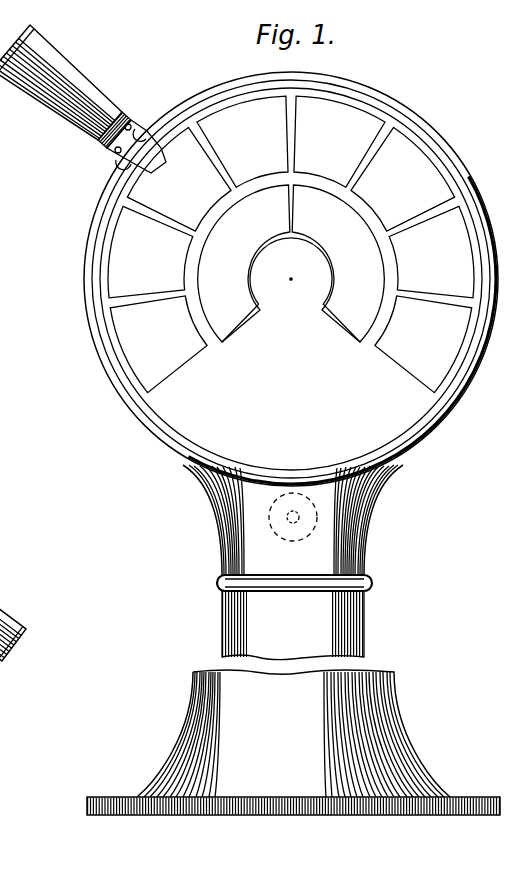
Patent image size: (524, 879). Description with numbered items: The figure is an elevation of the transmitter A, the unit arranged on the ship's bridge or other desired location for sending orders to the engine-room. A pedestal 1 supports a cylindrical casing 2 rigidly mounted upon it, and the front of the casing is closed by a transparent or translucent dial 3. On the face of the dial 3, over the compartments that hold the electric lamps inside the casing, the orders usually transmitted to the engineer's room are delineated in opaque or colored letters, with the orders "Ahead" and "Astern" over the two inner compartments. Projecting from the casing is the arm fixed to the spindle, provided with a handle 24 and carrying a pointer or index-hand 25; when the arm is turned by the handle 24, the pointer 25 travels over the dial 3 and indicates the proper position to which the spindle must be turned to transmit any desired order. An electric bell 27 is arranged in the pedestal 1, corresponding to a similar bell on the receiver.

The pedestal 1 is at (293, 640).
The cylindrical casing 2 is at (87, 313).
The dial 3 is at (290, 246).
The handle 24 is at (46, 112).
The pointer or index-hand 25 is at (136, 150).
The electric bell 27 is at (290, 535).
The transmitter A is at (458, 168).